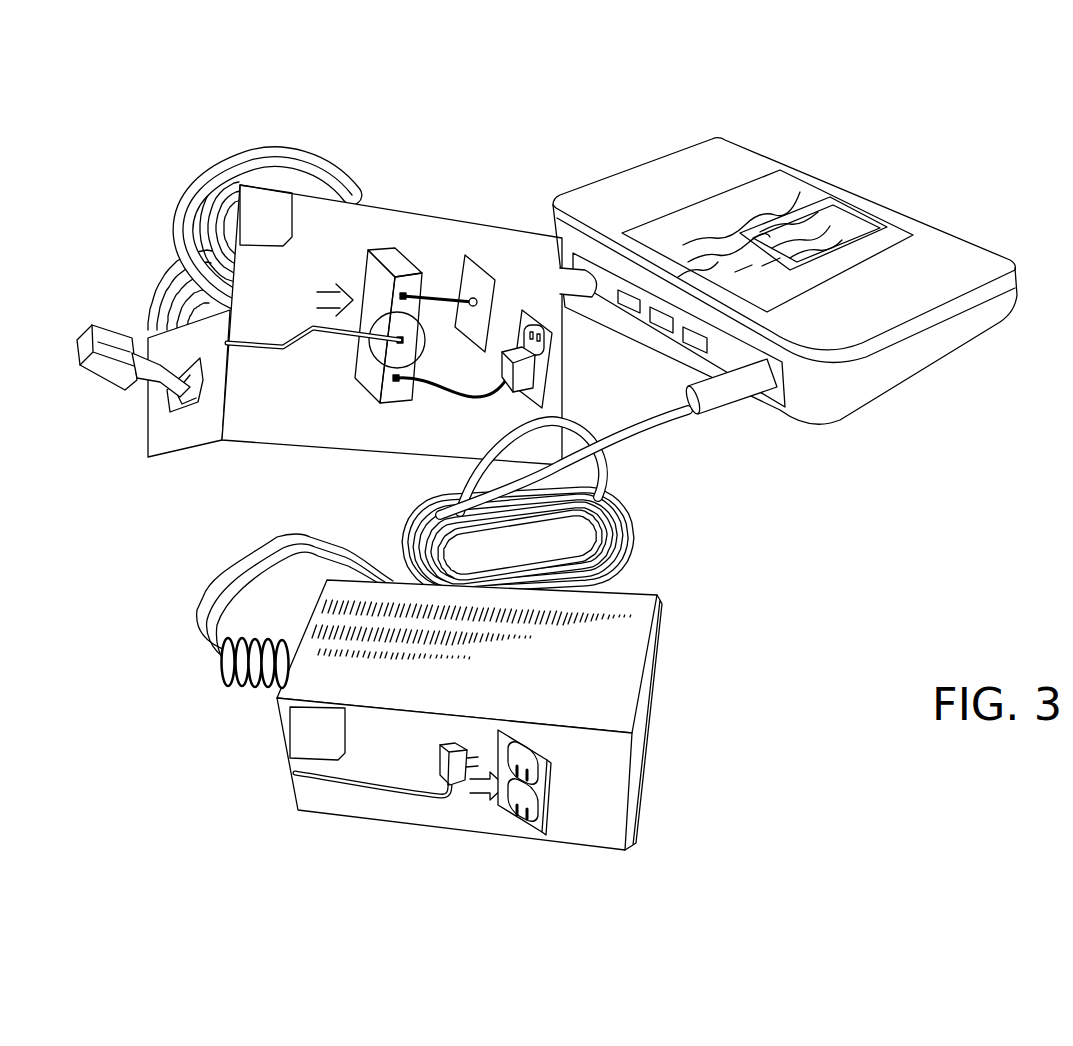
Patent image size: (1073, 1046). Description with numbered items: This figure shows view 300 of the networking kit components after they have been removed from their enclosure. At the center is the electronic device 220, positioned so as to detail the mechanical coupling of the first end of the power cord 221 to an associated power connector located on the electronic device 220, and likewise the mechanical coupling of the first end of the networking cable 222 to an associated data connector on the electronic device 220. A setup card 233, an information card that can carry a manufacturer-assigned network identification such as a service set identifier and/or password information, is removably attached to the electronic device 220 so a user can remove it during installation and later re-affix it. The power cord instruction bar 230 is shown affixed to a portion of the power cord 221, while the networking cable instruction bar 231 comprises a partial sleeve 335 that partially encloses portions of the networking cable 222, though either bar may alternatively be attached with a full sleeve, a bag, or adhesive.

The view 300 is at (95, 669).
The electronic device 220 is at (785, 317).
The power cord 221 is at (620, 540).
The networking cable 222 is at (178, 230).
The power cord instruction bar 230 is at (613, 780).
The networking cable instruction bar 231 is at (445, 257).
The setup card 233 is at (830, 255).
The partial sleeve 335 is at (170, 408).